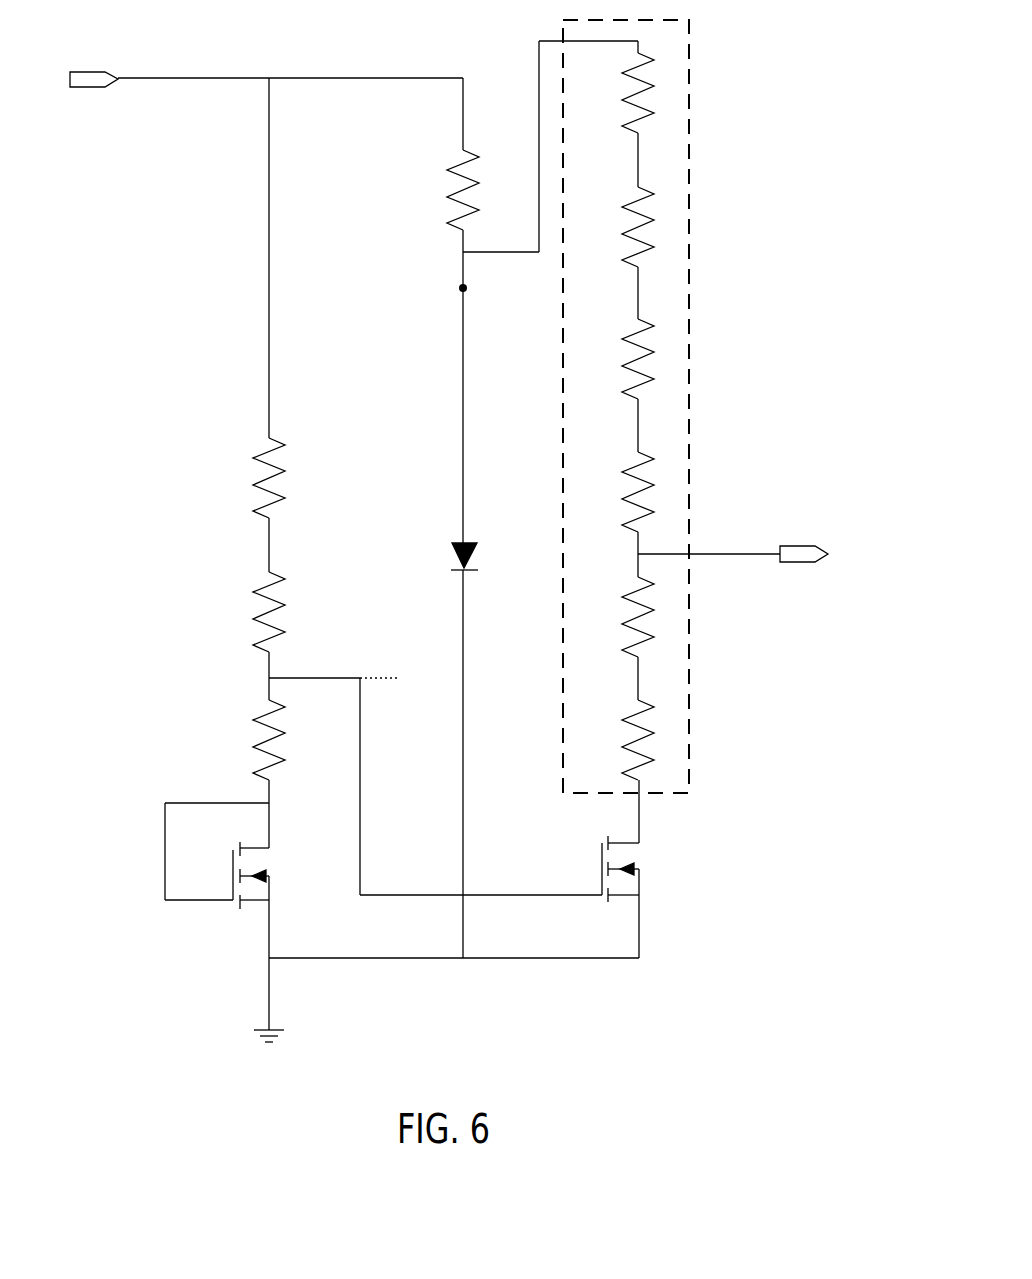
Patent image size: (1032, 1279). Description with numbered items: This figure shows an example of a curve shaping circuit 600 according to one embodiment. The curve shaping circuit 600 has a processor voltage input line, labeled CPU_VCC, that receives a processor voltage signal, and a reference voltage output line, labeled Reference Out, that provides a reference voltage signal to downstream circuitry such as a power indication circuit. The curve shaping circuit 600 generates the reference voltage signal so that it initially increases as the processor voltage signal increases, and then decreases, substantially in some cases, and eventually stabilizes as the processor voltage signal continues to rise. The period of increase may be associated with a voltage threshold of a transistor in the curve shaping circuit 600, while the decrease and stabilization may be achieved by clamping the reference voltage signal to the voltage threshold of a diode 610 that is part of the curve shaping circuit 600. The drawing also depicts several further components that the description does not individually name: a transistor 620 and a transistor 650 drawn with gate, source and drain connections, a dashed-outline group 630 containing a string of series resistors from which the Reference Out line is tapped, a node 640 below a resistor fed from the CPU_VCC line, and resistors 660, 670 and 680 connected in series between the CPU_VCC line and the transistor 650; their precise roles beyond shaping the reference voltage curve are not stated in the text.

The curve shaping circuit 600 is at (459, 531).
The diode 610 is at (452, 553).
The transistor 620 is at (641, 880).
The resistor ladder 630 is at (690, 295).
The node / resistor 640 is at (458, 288).
The transistor 650 is at (165, 835).
The resistor 660 is at (254, 720).
The resistor 670 is at (254, 592).
The resistor 680 is at (254, 460).